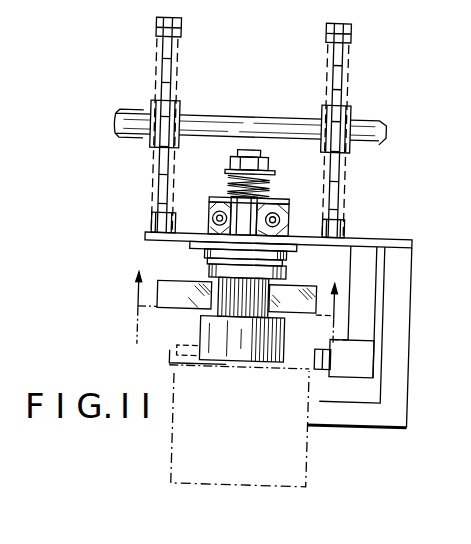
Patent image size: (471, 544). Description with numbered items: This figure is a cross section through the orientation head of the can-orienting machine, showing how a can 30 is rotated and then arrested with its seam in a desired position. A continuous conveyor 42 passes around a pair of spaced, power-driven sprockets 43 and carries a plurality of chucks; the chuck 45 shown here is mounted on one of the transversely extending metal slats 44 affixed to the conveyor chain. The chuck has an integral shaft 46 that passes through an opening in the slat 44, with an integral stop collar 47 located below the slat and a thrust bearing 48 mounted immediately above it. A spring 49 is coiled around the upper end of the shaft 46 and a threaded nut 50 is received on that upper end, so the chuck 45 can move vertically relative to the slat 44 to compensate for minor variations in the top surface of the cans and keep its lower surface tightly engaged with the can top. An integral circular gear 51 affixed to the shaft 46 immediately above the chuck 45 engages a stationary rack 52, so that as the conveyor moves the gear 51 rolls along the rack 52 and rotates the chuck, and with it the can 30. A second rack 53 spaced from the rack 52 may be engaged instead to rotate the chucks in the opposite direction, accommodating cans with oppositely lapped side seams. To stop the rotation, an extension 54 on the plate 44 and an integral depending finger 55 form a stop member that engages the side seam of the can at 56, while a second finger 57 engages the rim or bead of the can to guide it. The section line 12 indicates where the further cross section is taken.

The section line 12 is at (236, 299).
The can 30 is at (206, 442).
The continuous conveyor 42 is at (147, 222).
The sprockets 43 is at (328, 63).
The metal slat 44 is at (145, 240).
The chuck 45 is at (246, 344).
The shaft 46 is at (237, 213).
The stop collar 47 is at (289, 259).
The thrust bearing 48 is at (209, 227).
The spring 49 is at (267, 195).
The threaded nut 50 is at (256, 166).
The circular gear 51 is at (210, 268).
The rack 52 is at (298, 300).
The second rack 53 is at (186, 301).
The extension 54 is at (374, 240).
The depending finger 55 is at (395, 315).
The side seam engagement point 56 is at (315, 411).
The second finger 57 is at (324, 370).